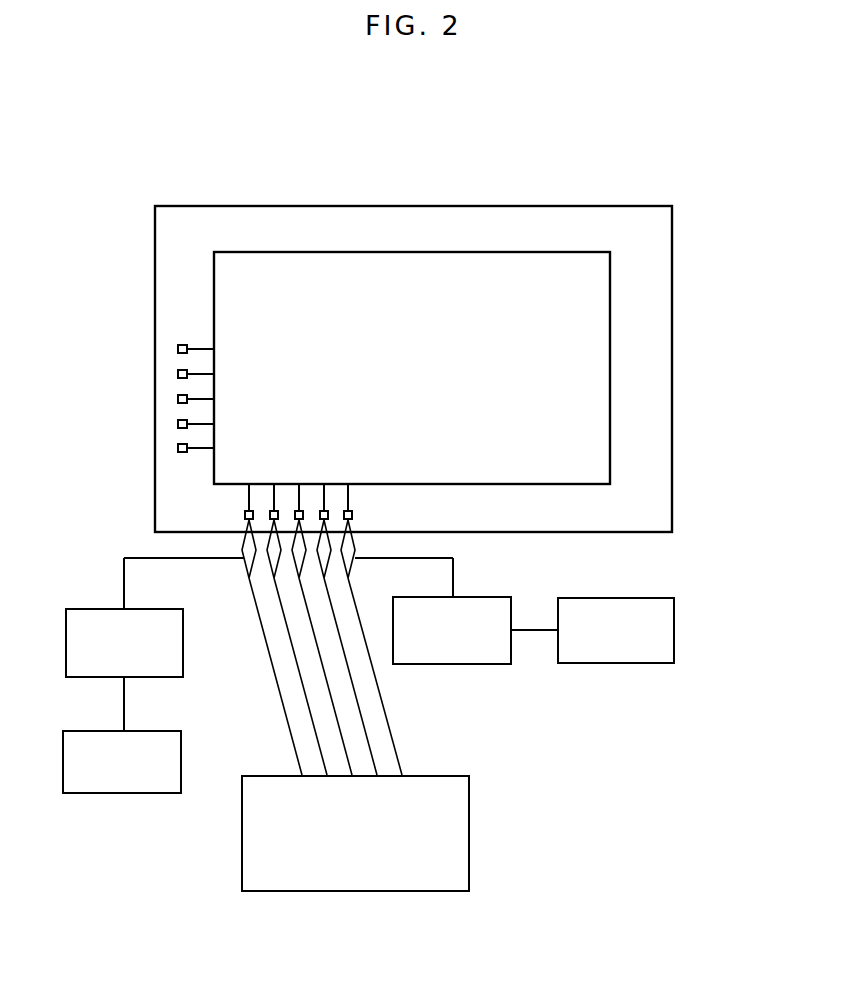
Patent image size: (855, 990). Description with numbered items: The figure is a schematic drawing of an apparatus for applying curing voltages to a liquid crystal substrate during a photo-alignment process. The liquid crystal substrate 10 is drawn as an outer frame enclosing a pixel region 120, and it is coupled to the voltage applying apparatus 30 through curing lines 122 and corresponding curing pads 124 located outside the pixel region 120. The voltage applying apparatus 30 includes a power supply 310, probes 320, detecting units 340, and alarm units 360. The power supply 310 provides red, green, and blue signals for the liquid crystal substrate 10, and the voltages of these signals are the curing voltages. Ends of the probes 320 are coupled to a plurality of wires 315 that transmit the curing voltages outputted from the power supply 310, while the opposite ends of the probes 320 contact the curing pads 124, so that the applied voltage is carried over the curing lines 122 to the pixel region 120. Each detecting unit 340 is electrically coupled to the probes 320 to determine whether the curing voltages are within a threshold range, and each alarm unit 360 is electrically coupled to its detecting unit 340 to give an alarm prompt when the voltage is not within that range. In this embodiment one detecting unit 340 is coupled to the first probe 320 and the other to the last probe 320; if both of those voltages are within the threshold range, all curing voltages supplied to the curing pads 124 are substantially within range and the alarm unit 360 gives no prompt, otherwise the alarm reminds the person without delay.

The liquid crystal substrate 10 is at (600, 169).
The pixel region 120 is at (611, 298).
The curing lines 122 is at (204, 348).
The curing pads 124 is at (353, 514).
The voltage applying apparatus 30 is at (627, 721).
The power supply 310 is at (470, 833).
The wires 315 is at (392, 735).
The probes 320 is at (240, 566).
The detecting unit 340 is at (66, 655).
The alarm unit 360 is at (138, 793).